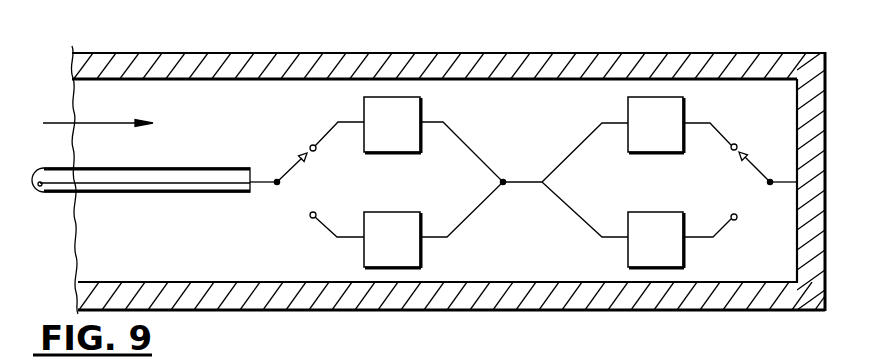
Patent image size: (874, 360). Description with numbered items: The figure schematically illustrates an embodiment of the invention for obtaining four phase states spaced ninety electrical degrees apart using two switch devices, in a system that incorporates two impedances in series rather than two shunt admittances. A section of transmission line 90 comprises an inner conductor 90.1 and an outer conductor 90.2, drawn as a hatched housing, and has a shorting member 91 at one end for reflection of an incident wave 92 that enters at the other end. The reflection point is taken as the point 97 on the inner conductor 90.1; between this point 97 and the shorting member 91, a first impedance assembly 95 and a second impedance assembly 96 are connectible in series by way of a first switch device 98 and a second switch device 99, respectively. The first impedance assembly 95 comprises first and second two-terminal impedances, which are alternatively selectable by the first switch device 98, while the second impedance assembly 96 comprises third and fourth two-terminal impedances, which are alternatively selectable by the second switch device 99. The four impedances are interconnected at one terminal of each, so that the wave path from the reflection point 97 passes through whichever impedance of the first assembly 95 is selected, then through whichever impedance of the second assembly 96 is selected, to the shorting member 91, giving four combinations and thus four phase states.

The section of transmission line 90 is at (455, 172).
The outer conductor 90.2 is at (248, 61).
The shorting member 91 is at (815, 110).
The incident wave 92 is at (98, 110).
The inner conductor 90.1 is at (150, 183).
The reflection point 97 is at (255, 184).
The first switch device 98 is at (301, 185).
The first impedance assembly 95 is at (457, 157).
The second impedance assembly 96 is at (708, 148).
The second switch device 99 is at (743, 188).